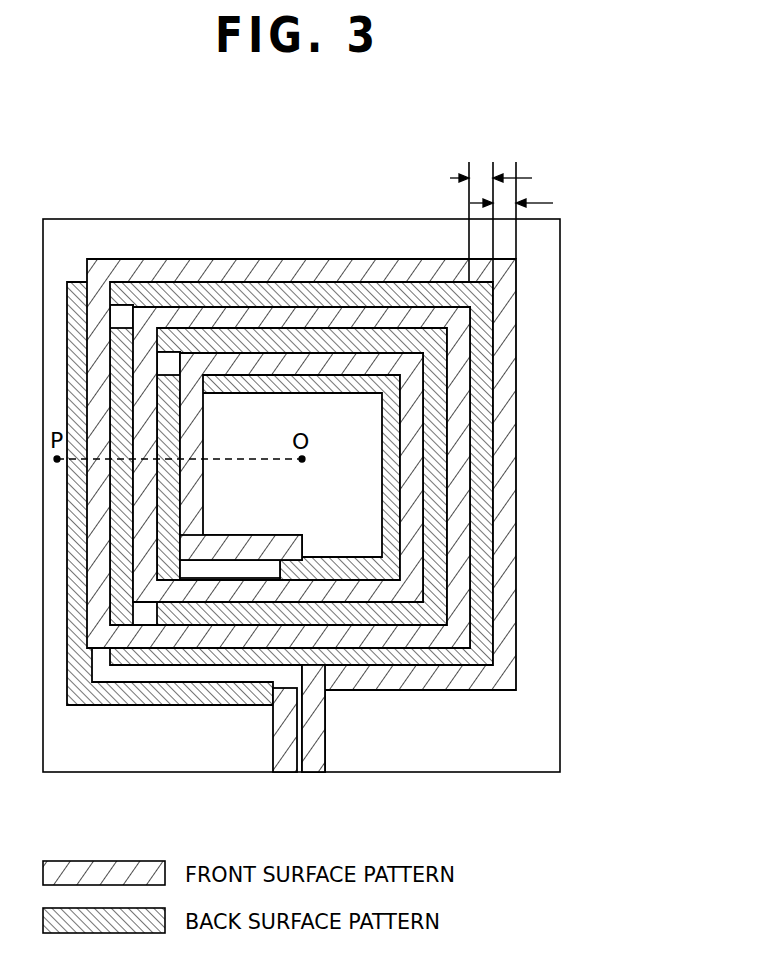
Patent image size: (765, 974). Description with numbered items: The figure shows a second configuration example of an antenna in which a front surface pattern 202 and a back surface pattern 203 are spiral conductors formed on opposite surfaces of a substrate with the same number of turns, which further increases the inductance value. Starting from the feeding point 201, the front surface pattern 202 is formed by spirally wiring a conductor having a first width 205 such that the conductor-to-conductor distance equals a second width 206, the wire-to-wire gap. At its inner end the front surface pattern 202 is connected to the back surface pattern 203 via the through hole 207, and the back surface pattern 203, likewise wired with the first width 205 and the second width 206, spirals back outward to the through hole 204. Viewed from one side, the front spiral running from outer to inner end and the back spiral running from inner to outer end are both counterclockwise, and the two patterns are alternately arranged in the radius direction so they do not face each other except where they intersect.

The feeding point 201 is at (300, 773).
The front surface pattern 202 is at (513, 688).
The back surface pattern 203 is at (147, 705).
The through hole 204 is at (273, 706).
The first width 205 is at (507, 201).
The second width 206 is at (479, 178).
The through hole 207 is at (294, 535).